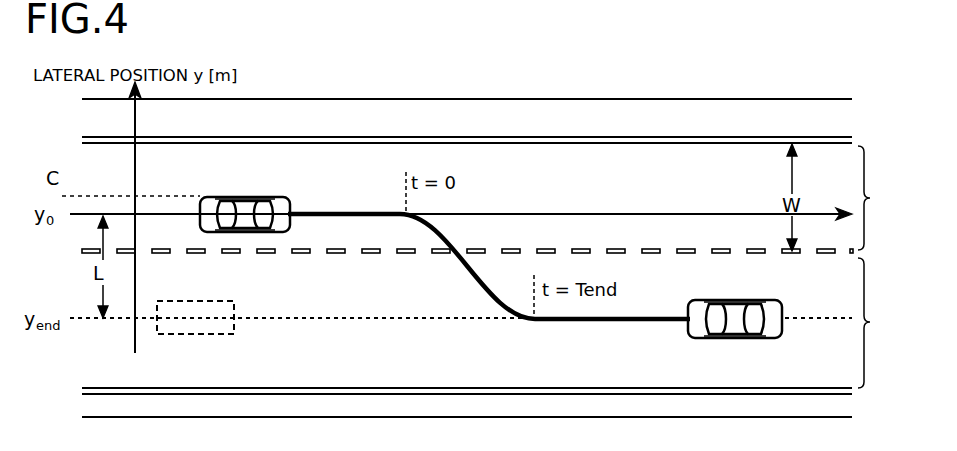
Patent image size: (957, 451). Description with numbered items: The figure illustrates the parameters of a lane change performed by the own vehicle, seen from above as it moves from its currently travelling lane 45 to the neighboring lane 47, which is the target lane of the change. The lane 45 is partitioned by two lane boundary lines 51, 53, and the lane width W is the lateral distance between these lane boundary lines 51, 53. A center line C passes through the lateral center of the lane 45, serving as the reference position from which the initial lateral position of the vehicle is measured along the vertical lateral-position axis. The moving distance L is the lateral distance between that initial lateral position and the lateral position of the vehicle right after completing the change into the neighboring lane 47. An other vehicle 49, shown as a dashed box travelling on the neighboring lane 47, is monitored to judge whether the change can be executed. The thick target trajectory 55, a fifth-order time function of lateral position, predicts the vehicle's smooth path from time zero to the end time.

The lane 45 is at (879, 198).
The neighboring lane 47 is at (879, 323).
The other vehicle 49 is at (210, 300).
The lane boundary line 51 is at (685, 145).
The lane boundary line 53 is at (686, 251).
The target trajectory 55 is at (458, 238).